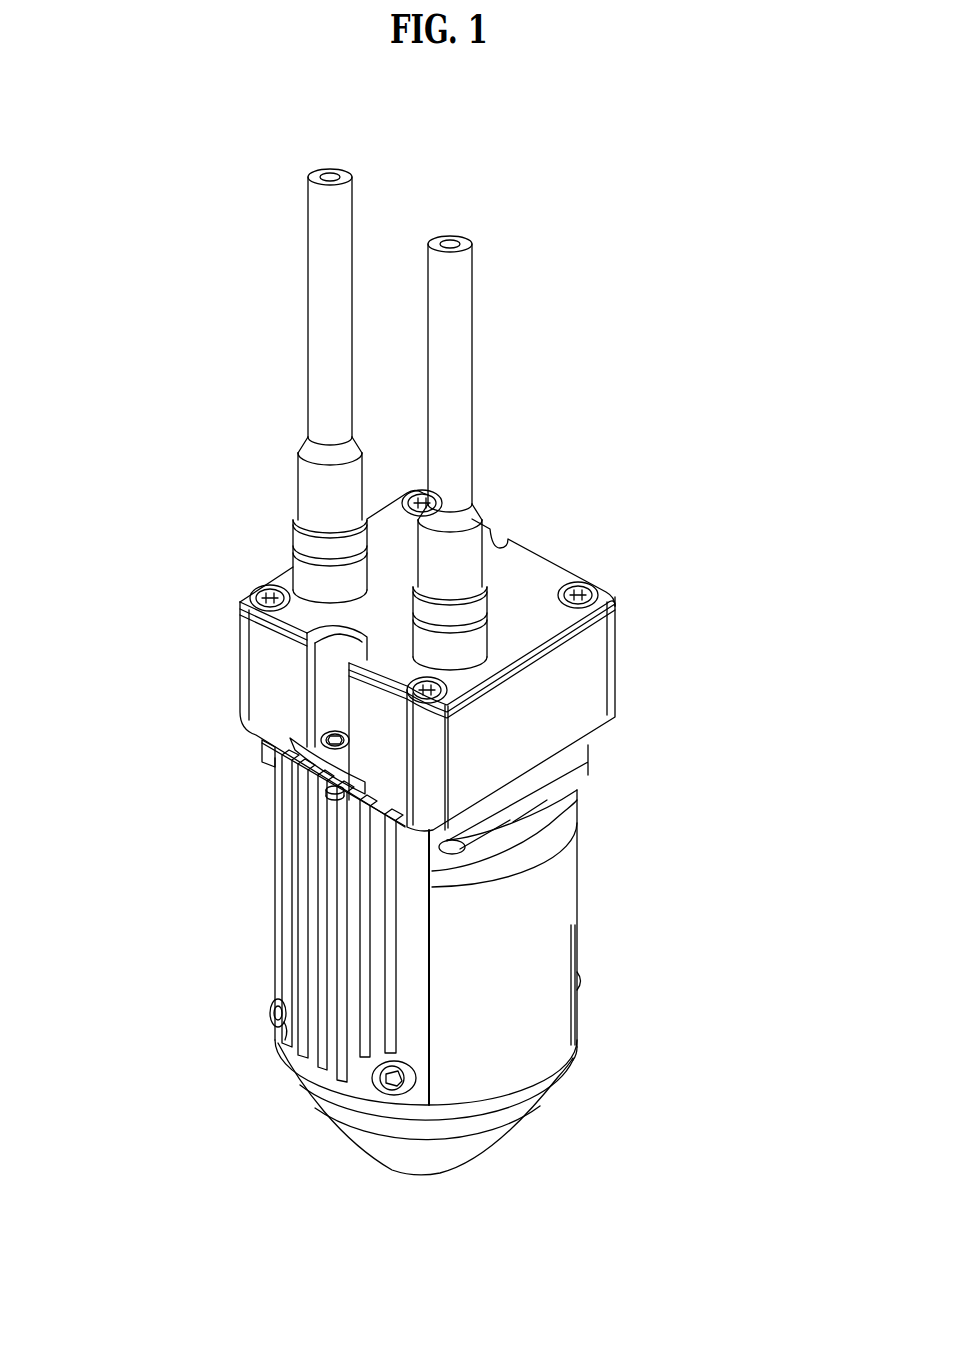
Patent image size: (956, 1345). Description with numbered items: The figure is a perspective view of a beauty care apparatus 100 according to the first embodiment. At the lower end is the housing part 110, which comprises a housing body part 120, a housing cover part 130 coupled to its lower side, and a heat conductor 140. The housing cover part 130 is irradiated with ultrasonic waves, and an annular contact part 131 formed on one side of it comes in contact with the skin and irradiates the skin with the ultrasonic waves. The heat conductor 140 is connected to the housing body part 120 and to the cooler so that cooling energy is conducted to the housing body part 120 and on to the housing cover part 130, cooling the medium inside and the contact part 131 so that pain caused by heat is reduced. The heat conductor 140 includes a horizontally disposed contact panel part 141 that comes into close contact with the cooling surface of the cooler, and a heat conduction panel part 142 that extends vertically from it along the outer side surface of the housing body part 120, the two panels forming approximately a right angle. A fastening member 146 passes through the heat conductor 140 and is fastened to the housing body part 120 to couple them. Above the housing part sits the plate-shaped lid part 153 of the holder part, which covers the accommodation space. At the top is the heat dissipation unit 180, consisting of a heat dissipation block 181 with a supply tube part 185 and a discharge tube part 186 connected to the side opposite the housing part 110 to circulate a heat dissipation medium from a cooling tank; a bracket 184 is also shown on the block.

The beauty care apparatus 100 is at (140, 184).
The housing part 110 is at (710, 912).
The housing body part 120 is at (532, 924).
The housing cover part 130 is at (478, 1143).
The contact part 131 is at (452, 1177).
The heat conductor 140 is at (407, 965).
The contact panel part 141 is at (463, 828).
The heat conduction panel part 142 is at (310, 924).
The fastening member 146 is at (270, 1018).
The lid part 153 is at (535, 818).
The heat dissipation unit 180 is at (582, 552).
The heat dissipation block 181 is at (527, 583).
The fixing bracket 184 is at (333, 739).
The supply tube part 185 is at (327, 291).
The discharge tube part 186 is at (468, 332).